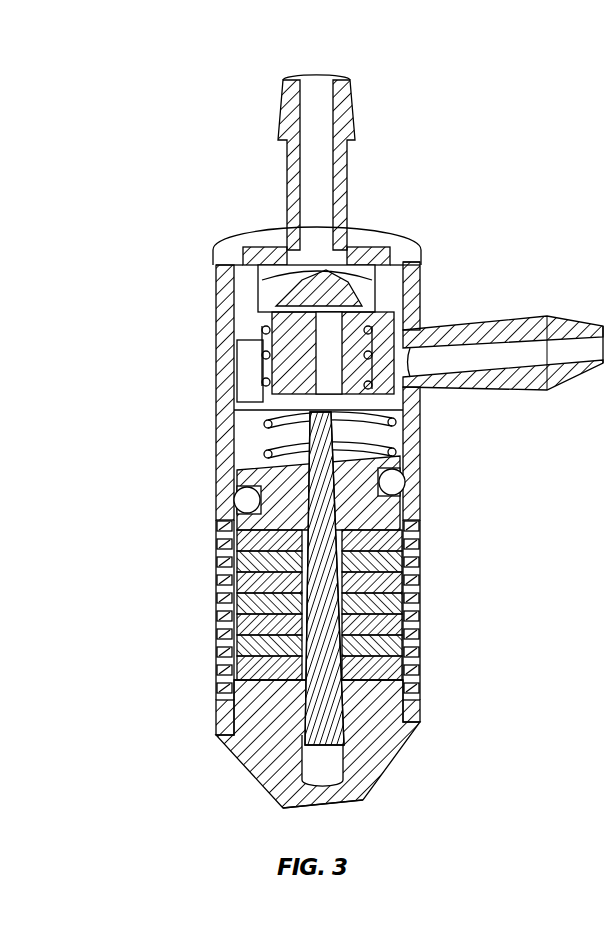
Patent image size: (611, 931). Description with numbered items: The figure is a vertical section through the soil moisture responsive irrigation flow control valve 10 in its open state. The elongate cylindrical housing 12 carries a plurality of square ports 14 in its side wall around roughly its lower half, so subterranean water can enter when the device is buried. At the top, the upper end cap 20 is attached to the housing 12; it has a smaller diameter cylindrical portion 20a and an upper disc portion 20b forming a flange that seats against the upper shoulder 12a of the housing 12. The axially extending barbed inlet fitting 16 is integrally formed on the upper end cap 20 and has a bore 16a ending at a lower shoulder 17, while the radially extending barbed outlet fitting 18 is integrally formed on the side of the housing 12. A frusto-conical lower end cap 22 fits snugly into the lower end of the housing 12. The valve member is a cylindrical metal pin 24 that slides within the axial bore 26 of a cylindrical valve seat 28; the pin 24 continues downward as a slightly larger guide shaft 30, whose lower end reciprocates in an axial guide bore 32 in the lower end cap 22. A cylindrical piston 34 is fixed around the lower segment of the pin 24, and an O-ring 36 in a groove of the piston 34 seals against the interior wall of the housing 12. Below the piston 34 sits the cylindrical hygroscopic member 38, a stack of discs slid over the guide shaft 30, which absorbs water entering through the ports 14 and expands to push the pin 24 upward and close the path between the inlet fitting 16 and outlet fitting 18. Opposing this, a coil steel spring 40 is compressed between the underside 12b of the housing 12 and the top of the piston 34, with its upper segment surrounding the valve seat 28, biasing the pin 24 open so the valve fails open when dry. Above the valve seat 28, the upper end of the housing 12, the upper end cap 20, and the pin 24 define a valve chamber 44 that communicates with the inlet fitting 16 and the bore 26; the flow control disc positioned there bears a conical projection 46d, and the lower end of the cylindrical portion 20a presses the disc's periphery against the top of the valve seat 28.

The soil moisture responsive irrigation flow control valve 10 is at (368, 430).
The housing 12 is at (328, 525).
The upper shoulder 12a is at (418, 272).
The underside of the housing 12b is at (240, 345).
The ports 14 is at (421, 598).
The barbed inlet fitting 16 is at (345, 150).
The bore 16a is at (318, 80).
The lower shoulder 17 is at (392, 280).
The barbed outlet fitting 18 is at (487, 394).
The upper end cap 20 is at (312, 250).
The cylindrical portion 20a is at (405, 262).
The upper disc portion 20b is at (362, 233).
The lower end cap 22 is at (340, 741).
The pin 24 is at (385, 441).
The axial bore 26 is at (396, 312).
The valve seat 28 is at (402, 336).
The guide shaft 30 is at (300, 776).
The axial guide bore 32 is at (366, 801).
The piston 34 is at (318, 493).
The O-ring 36 is at (396, 488).
The hygroscopic member 38 is at (382, 674).
The coil spring 40 is at (400, 412).
The valve chamber 44 is at (278, 276).
The conical projection 46d is at (305, 290).